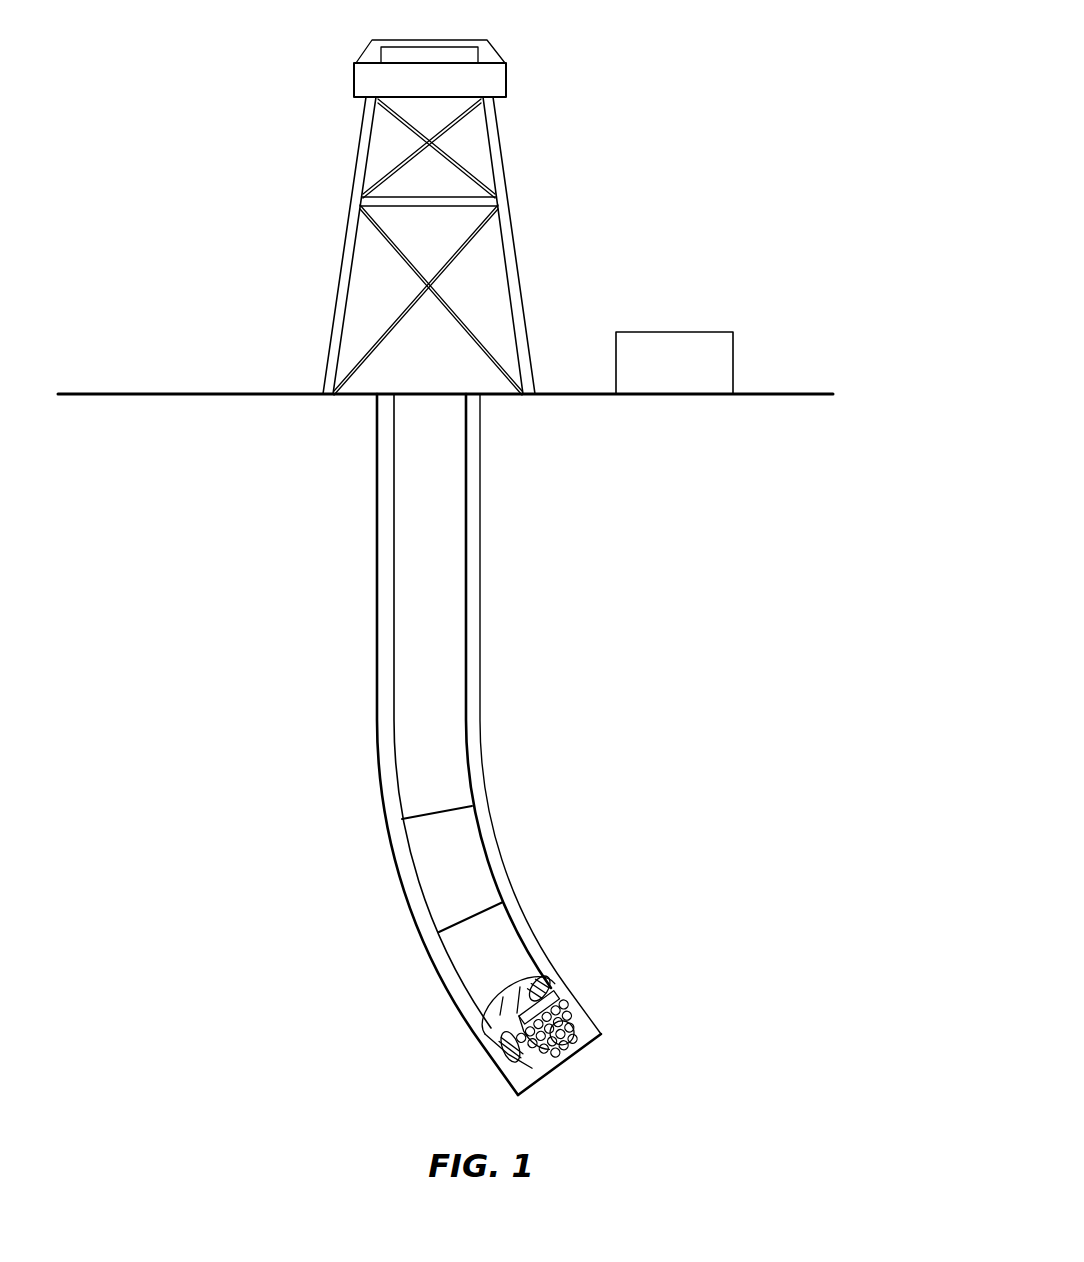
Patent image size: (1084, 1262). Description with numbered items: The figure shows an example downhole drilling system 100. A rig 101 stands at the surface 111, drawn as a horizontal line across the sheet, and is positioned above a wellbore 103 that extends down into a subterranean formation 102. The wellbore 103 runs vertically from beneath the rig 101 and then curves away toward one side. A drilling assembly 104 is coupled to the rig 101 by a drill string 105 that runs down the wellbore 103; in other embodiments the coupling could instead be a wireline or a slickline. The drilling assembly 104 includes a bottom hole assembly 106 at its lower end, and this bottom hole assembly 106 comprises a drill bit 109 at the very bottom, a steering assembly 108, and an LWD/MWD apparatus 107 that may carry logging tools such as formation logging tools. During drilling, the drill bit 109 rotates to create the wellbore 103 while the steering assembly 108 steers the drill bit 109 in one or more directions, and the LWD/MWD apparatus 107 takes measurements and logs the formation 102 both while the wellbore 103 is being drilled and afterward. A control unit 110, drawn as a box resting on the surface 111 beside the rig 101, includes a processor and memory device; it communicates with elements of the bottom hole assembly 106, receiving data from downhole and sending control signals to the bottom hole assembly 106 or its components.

The downhole drilling system 100 is at (472, 551).
The rig 101 is at (507, 78).
The subterranean formation 102 is at (687, 577).
The wellbore 103 is at (372, 552).
The drilling assembly 104 is at (388, 652).
The drill string 105 is at (467, 626).
The bottom hole assembly 106 is at (478, 1062).
The LWD/MWD apparatus 107 is at (490, 857).
The steering assembly 108 is at (527, 957).
The drill bit 109 is at (583, 1040).
The control unit 110 is at (674, 363).
The surface 111 is at (788, 393).